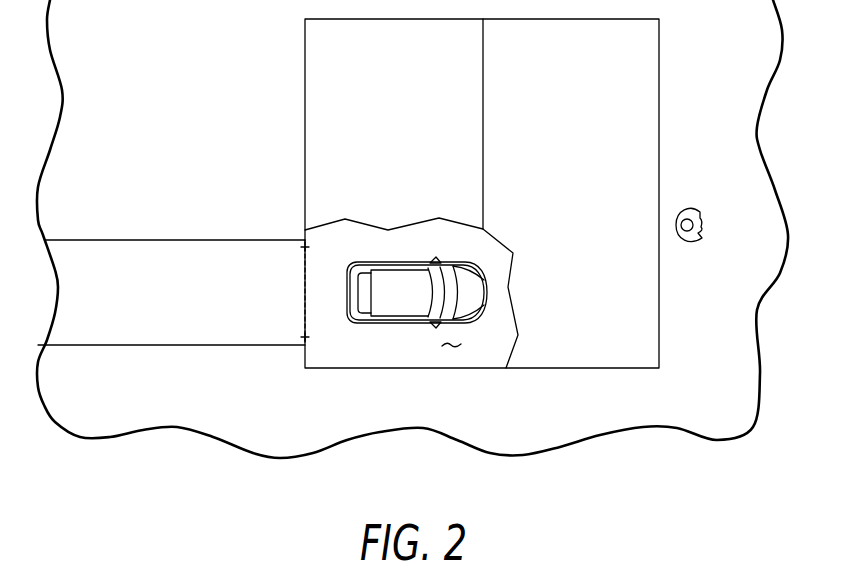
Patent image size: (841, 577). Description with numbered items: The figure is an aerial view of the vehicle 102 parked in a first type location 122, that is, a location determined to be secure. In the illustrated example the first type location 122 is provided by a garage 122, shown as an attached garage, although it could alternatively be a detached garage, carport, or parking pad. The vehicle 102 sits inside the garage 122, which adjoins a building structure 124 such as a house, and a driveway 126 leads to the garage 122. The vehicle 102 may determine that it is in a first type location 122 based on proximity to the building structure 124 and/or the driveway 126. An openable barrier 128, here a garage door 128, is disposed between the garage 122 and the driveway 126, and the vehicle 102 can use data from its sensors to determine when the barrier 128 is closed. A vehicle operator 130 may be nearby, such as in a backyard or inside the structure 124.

The vehicle 102 is at (400, 325).
The first type location 122 is at (454, 348).
The building structure 124 is at (418, 104).
The driveway 126 is at (195, 305).
The openable barrier 128 is at (305, 285).
The vehicle operator 130 is at (690, 206).